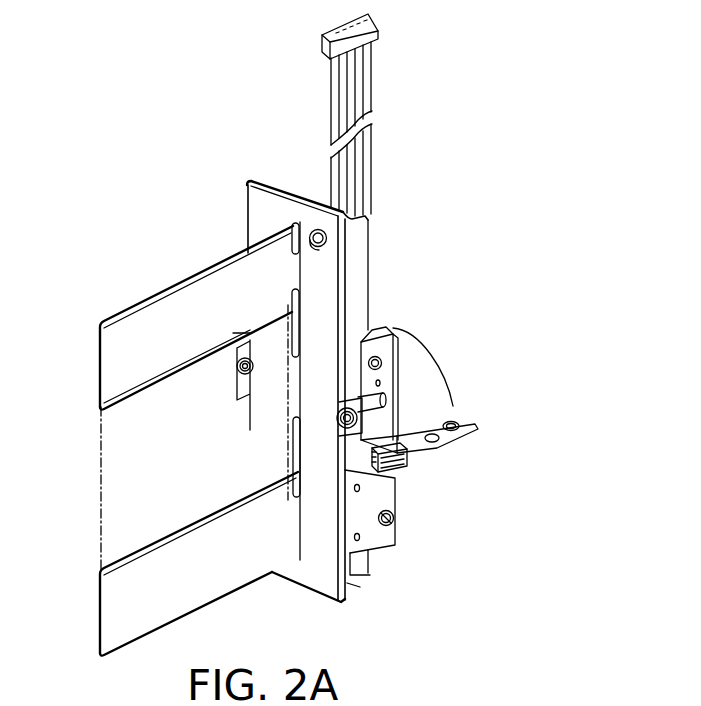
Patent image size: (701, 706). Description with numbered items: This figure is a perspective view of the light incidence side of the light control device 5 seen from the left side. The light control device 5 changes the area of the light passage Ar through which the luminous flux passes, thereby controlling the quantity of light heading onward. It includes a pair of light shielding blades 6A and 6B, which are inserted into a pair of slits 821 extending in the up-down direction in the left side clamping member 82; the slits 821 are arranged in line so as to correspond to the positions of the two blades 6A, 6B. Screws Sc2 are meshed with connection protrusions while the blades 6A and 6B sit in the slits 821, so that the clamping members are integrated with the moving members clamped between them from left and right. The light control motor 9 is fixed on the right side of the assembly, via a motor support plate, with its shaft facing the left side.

The light control device 5 is at (79, 137).
The light shielding blade 6A is at (156, 316).
The light shielding blade 6B is at (232, 580).
The left side clamping member 82 is at (327, 270).
The slits 821 is at (291, 352).
The light control motor 9 is at (393, 334).
The screws Sc2 is at (311, 236).
The light passage Ar is at (101, 452).